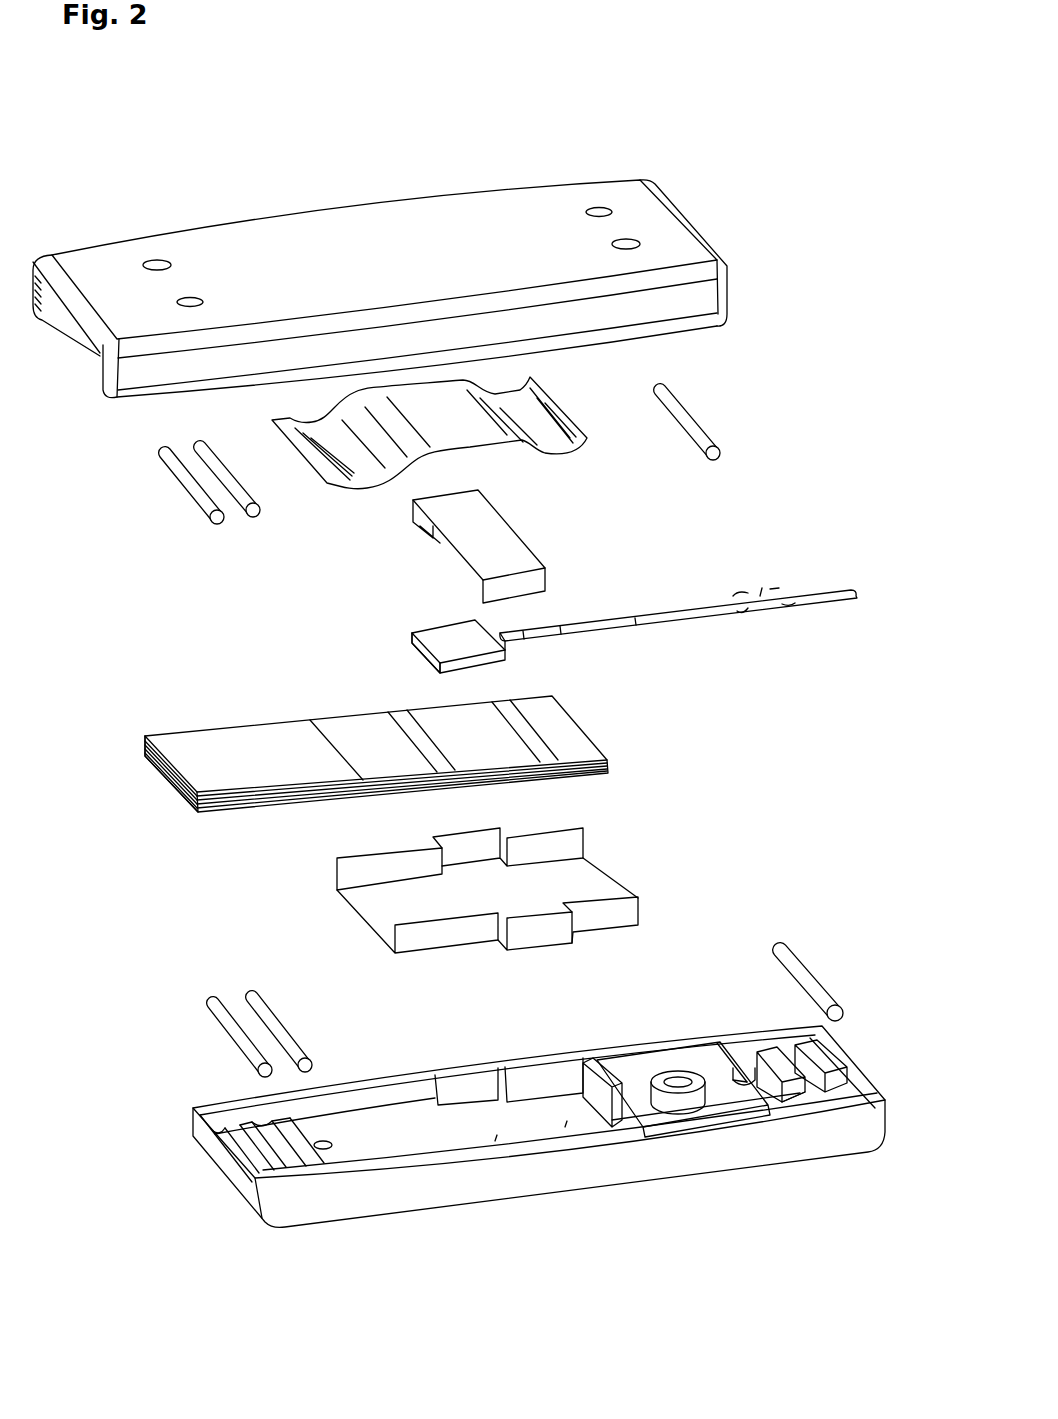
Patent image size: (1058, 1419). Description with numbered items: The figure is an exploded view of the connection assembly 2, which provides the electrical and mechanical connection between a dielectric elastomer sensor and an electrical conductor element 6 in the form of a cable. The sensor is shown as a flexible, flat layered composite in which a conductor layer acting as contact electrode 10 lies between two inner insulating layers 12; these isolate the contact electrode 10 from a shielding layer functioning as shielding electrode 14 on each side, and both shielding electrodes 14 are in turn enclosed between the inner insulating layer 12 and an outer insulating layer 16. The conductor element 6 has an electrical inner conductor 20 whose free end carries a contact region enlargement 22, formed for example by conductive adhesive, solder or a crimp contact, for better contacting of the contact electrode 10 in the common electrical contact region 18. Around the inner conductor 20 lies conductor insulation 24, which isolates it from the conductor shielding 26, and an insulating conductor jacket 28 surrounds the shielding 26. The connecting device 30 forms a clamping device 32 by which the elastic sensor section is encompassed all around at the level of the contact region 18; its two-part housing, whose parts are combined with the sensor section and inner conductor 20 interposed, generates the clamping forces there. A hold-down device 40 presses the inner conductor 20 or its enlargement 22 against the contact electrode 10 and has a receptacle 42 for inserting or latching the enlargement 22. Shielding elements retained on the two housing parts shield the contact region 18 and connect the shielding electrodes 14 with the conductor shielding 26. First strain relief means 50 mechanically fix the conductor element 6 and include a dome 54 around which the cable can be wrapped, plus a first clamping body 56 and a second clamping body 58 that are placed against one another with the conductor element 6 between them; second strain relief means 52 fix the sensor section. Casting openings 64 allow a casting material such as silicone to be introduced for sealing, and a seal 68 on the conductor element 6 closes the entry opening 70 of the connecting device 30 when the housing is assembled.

The connection assembly 2 is at (757, 98).
The electrical conductor element 6 is at (701, 607).
The contact electrode 10 is at (492, 752).
The inner insulating layers 12 is at (392, 718).
The shielding electrodes 14 is at (312, 724).
The outer insulating layer 16 is at (188, 768).
The electrical contact region 18 is at (512, 645).
The electrical inner conductor 20 is at (435, 628).
The contact region enlargement 22 is at (428, 630).
The conductor insulation 24 is at (524, 630).
The conductor shielding 26 is at (562, 626).
The conductor jacket 28 is at (634, 620).
The connecting device 30 is at (553, 1157).
The clamping device 32 is at (270, 208).
The hold-down device 40 is at (461, 541).
The receptacle 42 is at (437, 530).
The first strain relief means 50 is at (847, 968).
The second strain relief means 52 is at (207, 1002).
The dome 54 is at (680, 1071).
The first clamping body 56 is at (714, 422).
The second clamping body 58 is at (824, 993).
The casting openings 64 is at (157, 260).
The seal 68 is at (757, 606).
The entry opening 70 is at (845, 1078).